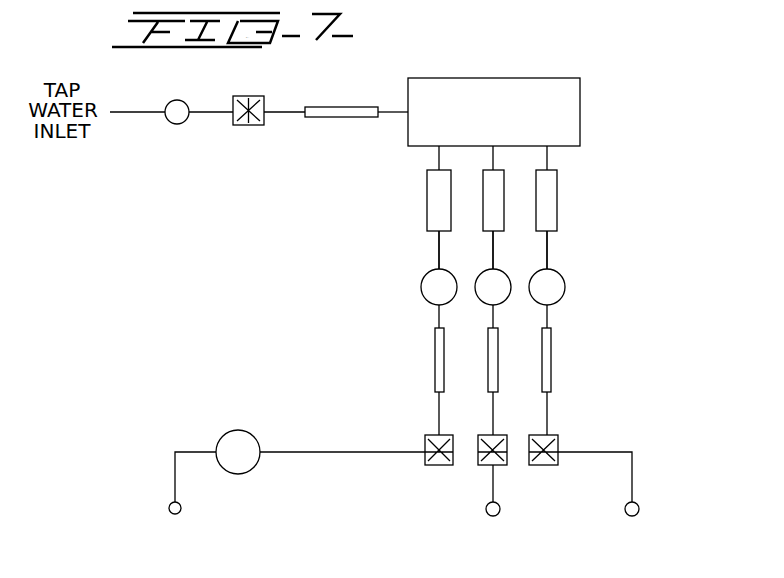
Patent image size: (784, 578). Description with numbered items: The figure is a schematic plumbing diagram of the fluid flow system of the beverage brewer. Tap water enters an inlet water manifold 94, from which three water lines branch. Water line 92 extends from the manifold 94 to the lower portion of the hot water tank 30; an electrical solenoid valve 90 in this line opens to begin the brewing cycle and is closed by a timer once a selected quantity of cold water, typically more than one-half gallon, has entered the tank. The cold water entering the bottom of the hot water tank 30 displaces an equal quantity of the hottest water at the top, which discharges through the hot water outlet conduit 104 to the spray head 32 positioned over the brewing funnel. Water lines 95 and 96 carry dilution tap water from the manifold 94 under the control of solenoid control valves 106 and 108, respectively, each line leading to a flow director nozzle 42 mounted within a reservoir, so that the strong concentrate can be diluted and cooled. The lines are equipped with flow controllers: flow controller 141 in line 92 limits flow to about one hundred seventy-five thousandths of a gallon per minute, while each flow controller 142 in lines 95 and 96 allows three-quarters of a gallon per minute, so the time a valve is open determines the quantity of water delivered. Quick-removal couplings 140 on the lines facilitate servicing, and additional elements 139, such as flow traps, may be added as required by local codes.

The inlet water manifold 94 is at (510, 78).
The elements 139 is at (247, 125).
The flow controller 141 is at (427, 195).
The flow controllers 142 is at (504, 189).
The water line 92 is at (439, 237).
The water line 96 is at (493, 251).
The water line 95 is at (547, 251).
The electrical solenoid valve 90 is at (424, 279).
The solenoid control valve 108 is at (508, 290).
The solenoid control valve 106 is at (565, 288).
The quick-removal couplings 140 is at (435, 346).
The hot water tank 30 is at (238, 430).
The hot water outlet conduit 104 is at (188, 452).
The spray head 32 is at (172, 514).
The flow director nozzle 42 is at (486, 512).